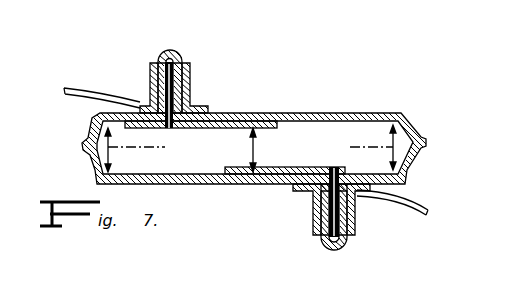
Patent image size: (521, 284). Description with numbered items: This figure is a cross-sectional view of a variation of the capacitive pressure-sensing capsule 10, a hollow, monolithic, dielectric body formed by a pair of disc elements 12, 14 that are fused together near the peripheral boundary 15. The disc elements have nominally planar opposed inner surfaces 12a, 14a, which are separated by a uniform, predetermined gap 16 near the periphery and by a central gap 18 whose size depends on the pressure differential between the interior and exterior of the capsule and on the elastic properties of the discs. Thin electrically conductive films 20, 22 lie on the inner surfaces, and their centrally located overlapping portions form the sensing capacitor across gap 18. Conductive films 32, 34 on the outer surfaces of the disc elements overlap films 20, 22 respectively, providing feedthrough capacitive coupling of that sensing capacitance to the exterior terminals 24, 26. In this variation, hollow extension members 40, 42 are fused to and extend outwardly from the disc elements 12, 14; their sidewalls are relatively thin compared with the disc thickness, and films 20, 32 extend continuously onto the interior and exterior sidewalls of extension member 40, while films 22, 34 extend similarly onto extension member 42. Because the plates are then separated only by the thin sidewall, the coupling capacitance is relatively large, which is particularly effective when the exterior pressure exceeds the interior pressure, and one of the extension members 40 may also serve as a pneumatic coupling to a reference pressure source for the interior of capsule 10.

The capsule 10 is at (308, 104).
The disc element 12 is at (356, 112).
The inner surface 12a is at (352, 152).
The disc element 14 is at (193, 185).
The inner surface 14a is at (160, 174).
The peripheral boundary 15 is at (428, 142).
The gap 16 is at (108, 158).
The gap 18 is at (253, 148).
The conductive film 20 is at (262, 127).
The conductive film 22 is at (296, 167).
The exterior terminal 24 is at (70, 88).
The exterior terminal 26 is at (403, 204).
The conductive film 32 is at (150, 80).
The conductive film 34 is at (312, 205).
The extension member 40 is at (176, 48).
The extension member 42 is at (323, 249).